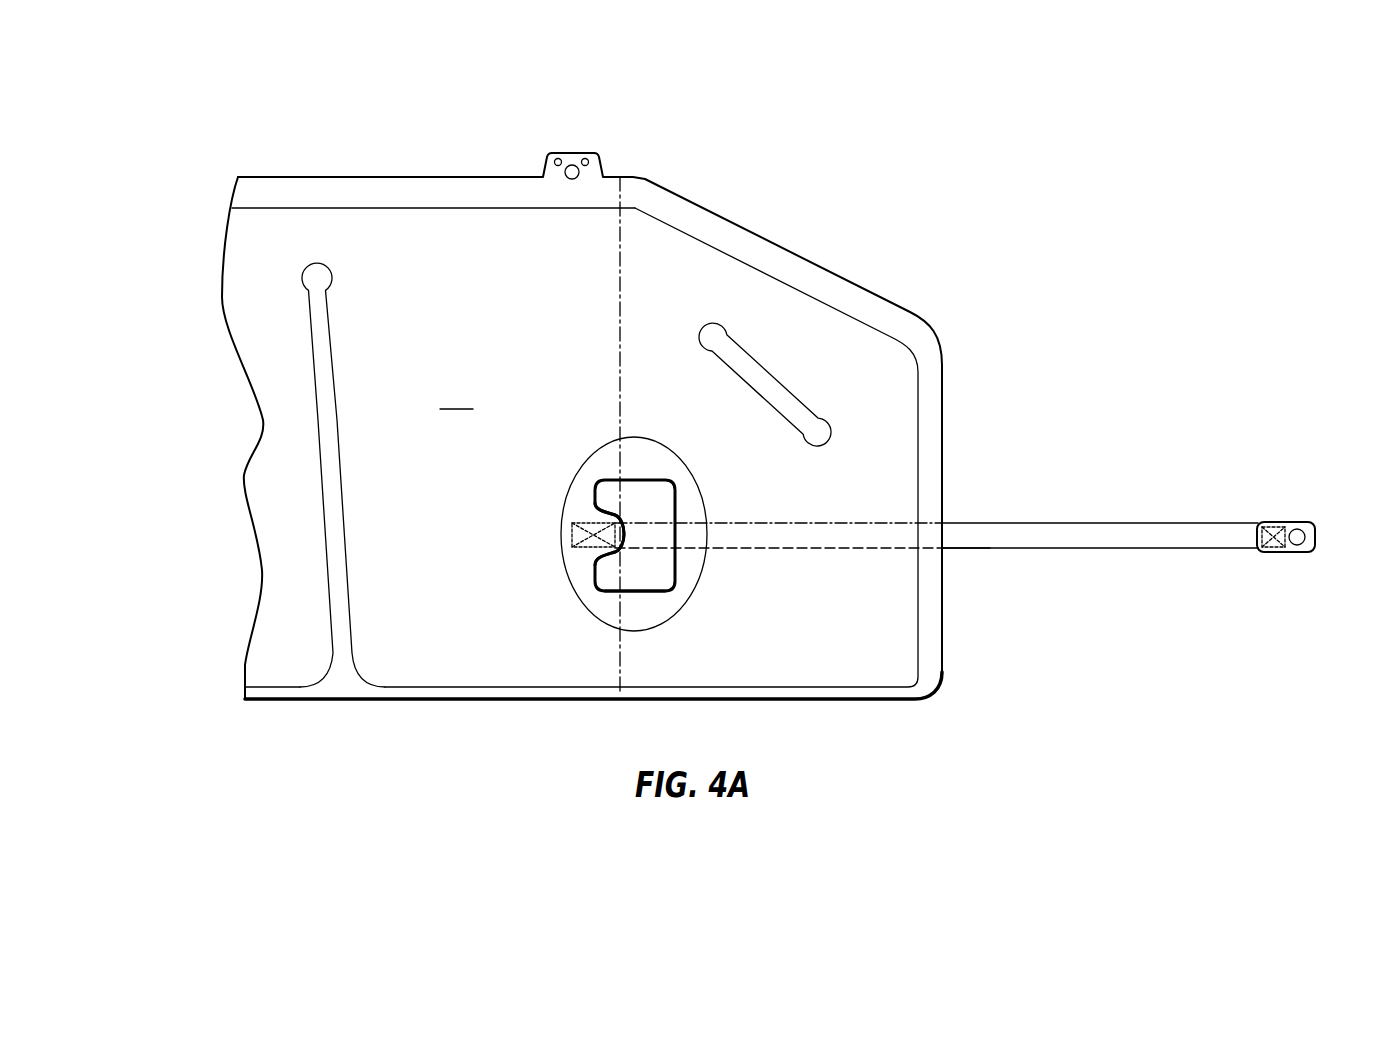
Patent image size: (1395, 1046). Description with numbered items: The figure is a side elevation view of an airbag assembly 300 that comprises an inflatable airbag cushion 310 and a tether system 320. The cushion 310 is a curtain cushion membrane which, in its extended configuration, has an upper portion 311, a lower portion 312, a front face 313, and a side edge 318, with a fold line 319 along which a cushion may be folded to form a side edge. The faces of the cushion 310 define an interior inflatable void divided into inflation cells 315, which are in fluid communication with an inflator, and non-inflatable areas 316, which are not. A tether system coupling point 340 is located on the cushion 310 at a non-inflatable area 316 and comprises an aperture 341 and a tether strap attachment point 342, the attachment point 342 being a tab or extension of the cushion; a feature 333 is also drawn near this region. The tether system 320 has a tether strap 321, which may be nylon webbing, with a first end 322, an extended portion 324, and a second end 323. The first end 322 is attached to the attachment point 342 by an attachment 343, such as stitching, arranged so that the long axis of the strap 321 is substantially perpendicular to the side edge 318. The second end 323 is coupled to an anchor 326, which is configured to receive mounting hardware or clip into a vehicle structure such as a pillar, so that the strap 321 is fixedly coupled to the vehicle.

The airbag assembly 300 is at (265, 114).
The inflatable airbag cushion 310 is at (263, 176).
The upper portion 311 is at (250, 220).
The lower portion 312 is at (262, 665).
The front face 313 is at (581, 447).
The inflation cells 315 is at (388, 360).
The non-inflatable areas 316 is at (595, 458).
The side edge 318 is at (942, 665).
The fold line 319 is at (620, 332).
The tether system 320 is at (1092, 577).
The tether strap 321 is at (1038, 527).
The first end 322 is at (658, 527).
The second end 323 is at (1237, 527).
The extended portion 324 is at (958, 545).
The anchor 326 is at (1297, 548).
The retainer 333 is at (693, 473).
The tether system coupling point 340 is at (553, 535).
The aperture 341 is at (657, 582).
The tether strap attachment point 342 is at (605, 512).
The attachment 343 is at (585, 545).